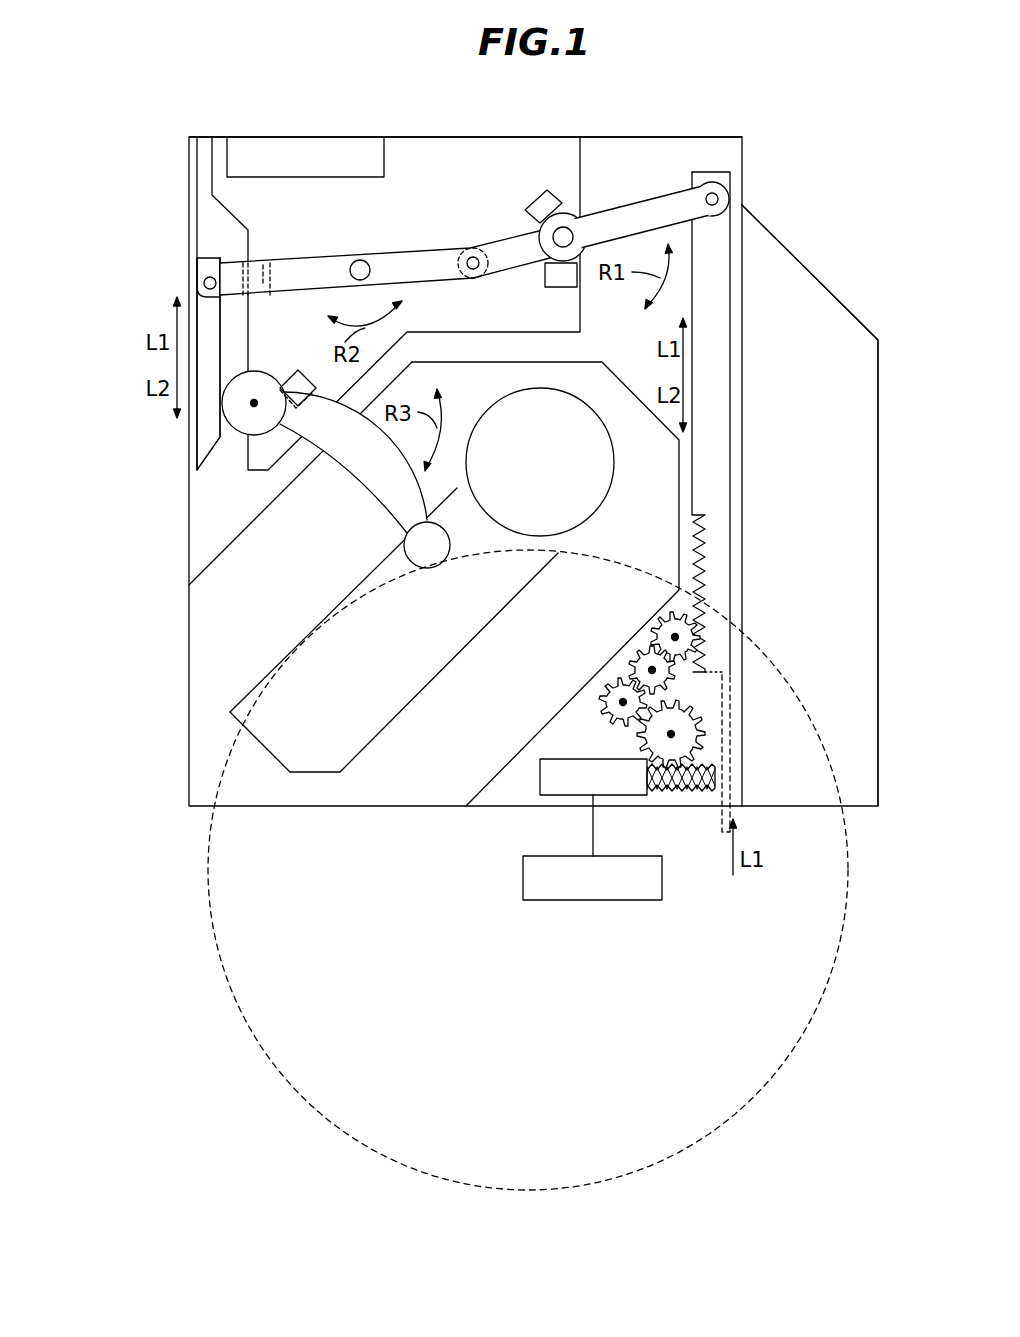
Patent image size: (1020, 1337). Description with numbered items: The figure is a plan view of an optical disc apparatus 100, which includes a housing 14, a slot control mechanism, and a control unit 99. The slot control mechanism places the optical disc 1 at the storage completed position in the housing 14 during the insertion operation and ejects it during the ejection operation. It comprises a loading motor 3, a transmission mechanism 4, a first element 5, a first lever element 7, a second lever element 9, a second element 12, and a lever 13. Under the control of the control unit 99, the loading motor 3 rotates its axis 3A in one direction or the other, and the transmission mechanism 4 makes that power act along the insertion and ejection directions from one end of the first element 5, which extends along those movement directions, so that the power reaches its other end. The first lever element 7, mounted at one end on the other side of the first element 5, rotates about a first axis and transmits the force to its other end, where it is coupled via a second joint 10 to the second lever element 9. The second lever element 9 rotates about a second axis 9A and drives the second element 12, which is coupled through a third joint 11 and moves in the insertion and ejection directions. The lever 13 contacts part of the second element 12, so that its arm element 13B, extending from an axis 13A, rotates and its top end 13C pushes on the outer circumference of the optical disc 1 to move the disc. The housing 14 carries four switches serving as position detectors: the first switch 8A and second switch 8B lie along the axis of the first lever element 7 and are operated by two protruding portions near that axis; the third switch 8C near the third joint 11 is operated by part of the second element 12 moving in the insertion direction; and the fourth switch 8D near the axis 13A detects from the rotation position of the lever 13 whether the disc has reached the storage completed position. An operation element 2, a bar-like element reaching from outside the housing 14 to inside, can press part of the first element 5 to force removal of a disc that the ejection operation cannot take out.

The optical disc apparatus 100 is at (690, 133).
The optical disc 1 is at (822, 995).
The operation element 2 is at (727, 812).
The loading motor 3 is at (633, 794).
The axis 3A is at (684, 792).
The transmission mechanism 4 is at (712, 732).
The first element 5 is at (733, 272).
The first lever element 7 is at (628, 203).
The first switch 8A is at (530, 200).
The second switch 8B is at (560, 288).
The third switch 8C is at (263, 277).
The fourth switch 8D is at (296, 372).
The second lever element 9 is at (418, 251).
The second axis 9A is at (360, 260).
The second joint 10 is at (473, 257).
The third joint 11 is at (204, 283).
The second element 12 is at (197, 447).
The lever 13 is at (240, 437).
The axis 13A is at (254, 403).
The arm element 13B is at (362, 468).
The top end 13C is at (428, 555).
The housing 14 is at (188, 735).
The control unit 99 is at (606, 900).